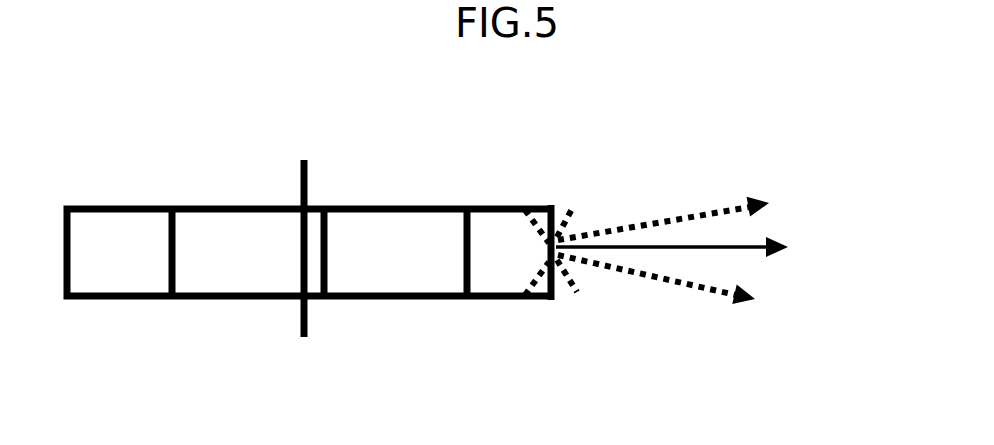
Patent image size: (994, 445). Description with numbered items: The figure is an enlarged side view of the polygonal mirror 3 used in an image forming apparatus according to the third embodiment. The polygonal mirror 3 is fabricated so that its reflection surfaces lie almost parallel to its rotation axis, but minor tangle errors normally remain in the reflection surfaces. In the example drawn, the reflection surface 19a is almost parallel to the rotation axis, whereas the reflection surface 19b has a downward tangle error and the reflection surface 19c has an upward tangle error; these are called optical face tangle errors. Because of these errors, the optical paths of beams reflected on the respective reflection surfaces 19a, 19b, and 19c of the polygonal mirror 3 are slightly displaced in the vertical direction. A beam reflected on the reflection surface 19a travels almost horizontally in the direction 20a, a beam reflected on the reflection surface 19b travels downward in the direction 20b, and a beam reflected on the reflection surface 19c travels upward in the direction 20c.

The polygonal mirror 3 is at (418, 205).
The reflection surface 19a is at (558, 280).
The reflection surface 19b is at (577, 213).
The reflection surface 19c is at (580, 275).
The direction 20a is at (773, 247).
The direction 20b is at (703, 290).
The direction 20c is at (710, 213).